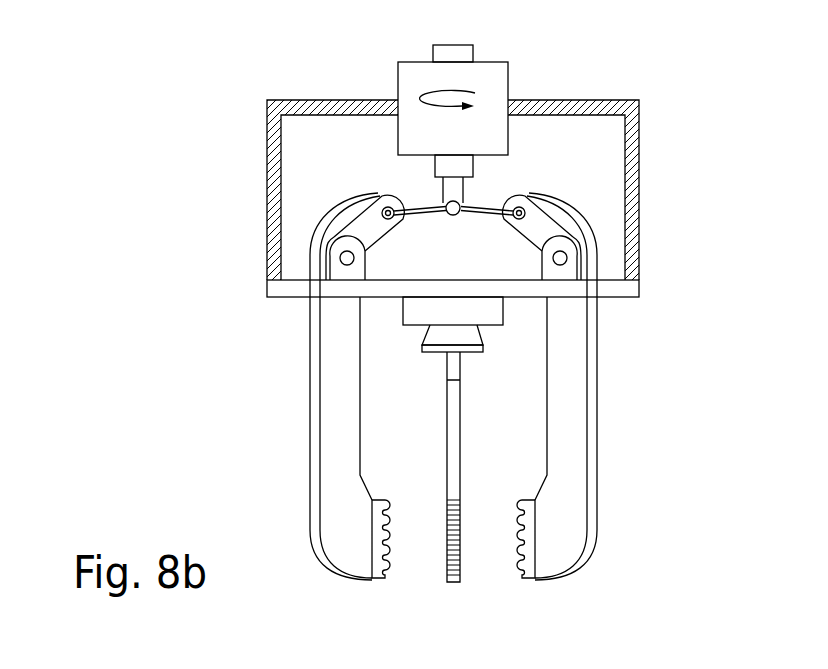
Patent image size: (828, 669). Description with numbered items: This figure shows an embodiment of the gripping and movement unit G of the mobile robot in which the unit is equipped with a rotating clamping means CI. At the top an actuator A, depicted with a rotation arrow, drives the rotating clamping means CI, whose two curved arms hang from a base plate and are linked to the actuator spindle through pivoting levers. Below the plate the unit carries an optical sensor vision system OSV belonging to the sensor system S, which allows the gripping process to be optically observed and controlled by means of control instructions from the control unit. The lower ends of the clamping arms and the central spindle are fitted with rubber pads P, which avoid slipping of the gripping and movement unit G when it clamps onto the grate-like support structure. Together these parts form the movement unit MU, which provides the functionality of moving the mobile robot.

The actuator A is at (493, 82).
The gripping and movement unit G is at (186, 204).
The optical sensor vision system OSV is at (487, 322).
The sensor system S is at (467, 343).
The rotating clamping means CI is at (453, 475).
The rubber pads P is at (460, 518).
The movement unit MU is at (540, 593).